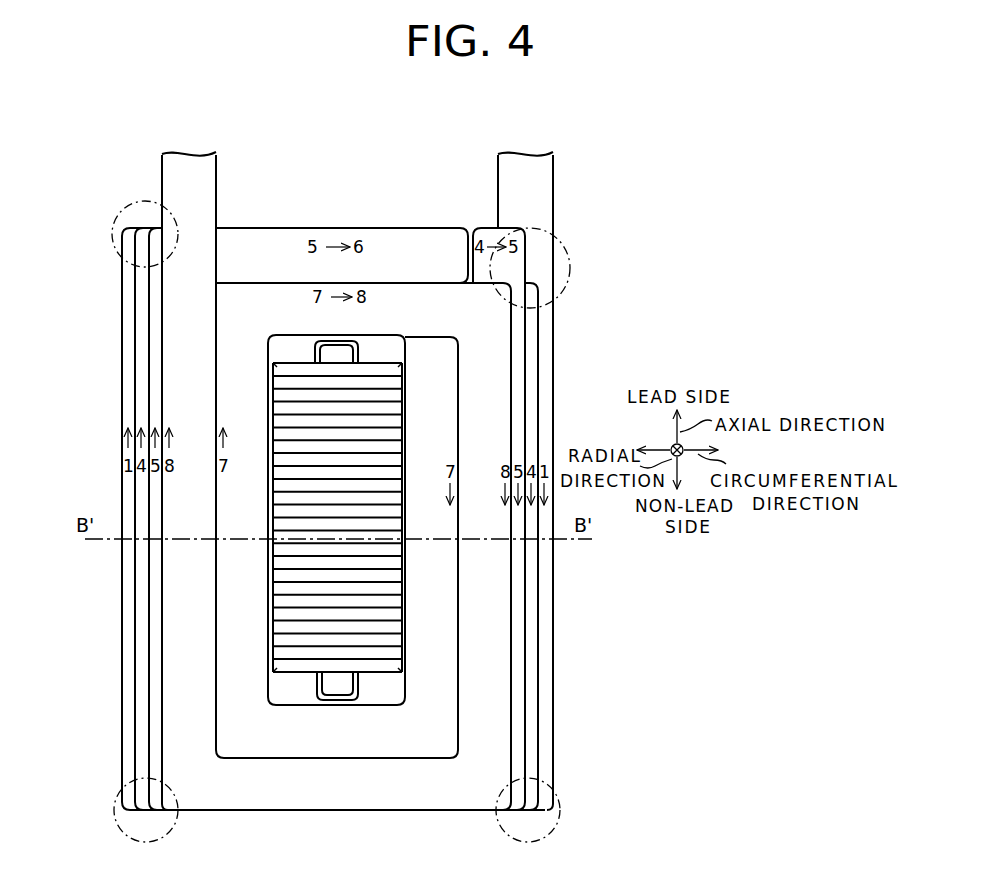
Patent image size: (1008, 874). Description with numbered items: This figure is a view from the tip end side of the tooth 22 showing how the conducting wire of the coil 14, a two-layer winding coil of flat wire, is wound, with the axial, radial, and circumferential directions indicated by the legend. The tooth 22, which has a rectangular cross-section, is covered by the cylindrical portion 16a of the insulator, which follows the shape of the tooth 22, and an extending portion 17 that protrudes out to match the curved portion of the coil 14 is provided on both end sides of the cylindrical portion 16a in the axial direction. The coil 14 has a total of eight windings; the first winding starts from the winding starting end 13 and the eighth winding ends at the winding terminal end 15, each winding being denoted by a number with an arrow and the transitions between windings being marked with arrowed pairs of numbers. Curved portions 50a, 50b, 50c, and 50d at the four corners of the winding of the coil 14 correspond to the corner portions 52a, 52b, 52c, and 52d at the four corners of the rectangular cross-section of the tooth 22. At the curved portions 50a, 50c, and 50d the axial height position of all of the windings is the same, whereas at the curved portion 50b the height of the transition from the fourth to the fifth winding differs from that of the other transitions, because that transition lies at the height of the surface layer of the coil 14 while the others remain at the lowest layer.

The winding starting end 13 is at (545, 190).
The coil 14 is at (395, 209).
The winding terminal end 15 is at (170, 175).
The cylindrical portion 16a is at (268, 590).
The extending portion 17 is at (308, 343).
The tooth 22 is at (350, 499).
The curved portion 50a is at (114, 246).
The curved portion 50b is at (562, 245).
The curved portion 50c is at (560, 797).
The curved portion 50d is at (114, 797).
The corner portion 52a is at (268, 364).
The corner portion 52b is at (405, 363).
The corner portion 52c is at (405, 668).
The corner portion 52d is at (272, 668).